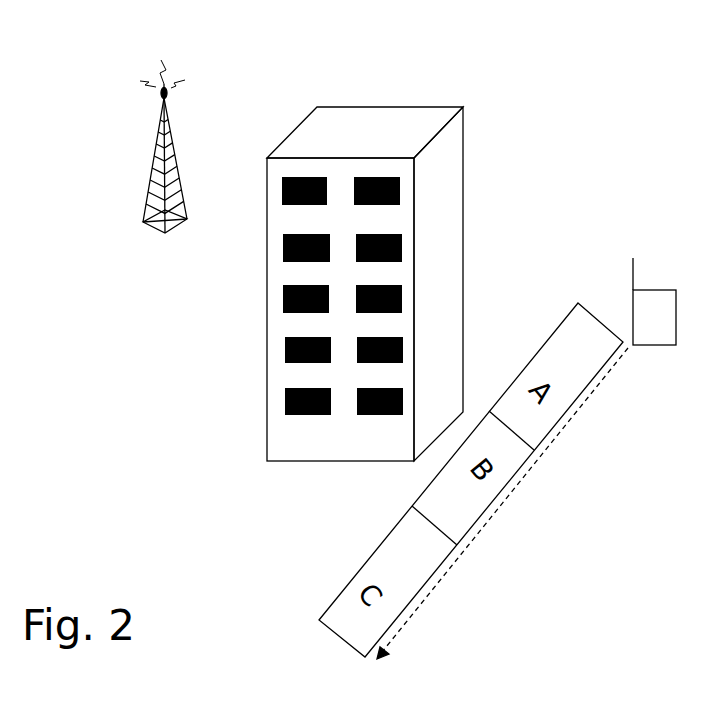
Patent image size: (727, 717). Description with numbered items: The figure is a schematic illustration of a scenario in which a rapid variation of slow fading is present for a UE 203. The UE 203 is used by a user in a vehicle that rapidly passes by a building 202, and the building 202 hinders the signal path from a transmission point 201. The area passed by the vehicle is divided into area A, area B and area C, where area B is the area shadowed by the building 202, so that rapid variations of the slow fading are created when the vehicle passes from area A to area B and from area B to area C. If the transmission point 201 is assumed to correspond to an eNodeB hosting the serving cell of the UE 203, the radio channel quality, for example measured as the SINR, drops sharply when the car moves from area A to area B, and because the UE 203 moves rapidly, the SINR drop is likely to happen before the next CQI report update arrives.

The transmission point 201 is at (180, 118).
The building 202 is at (472, 148).
The UE 203 is at (632, 285).